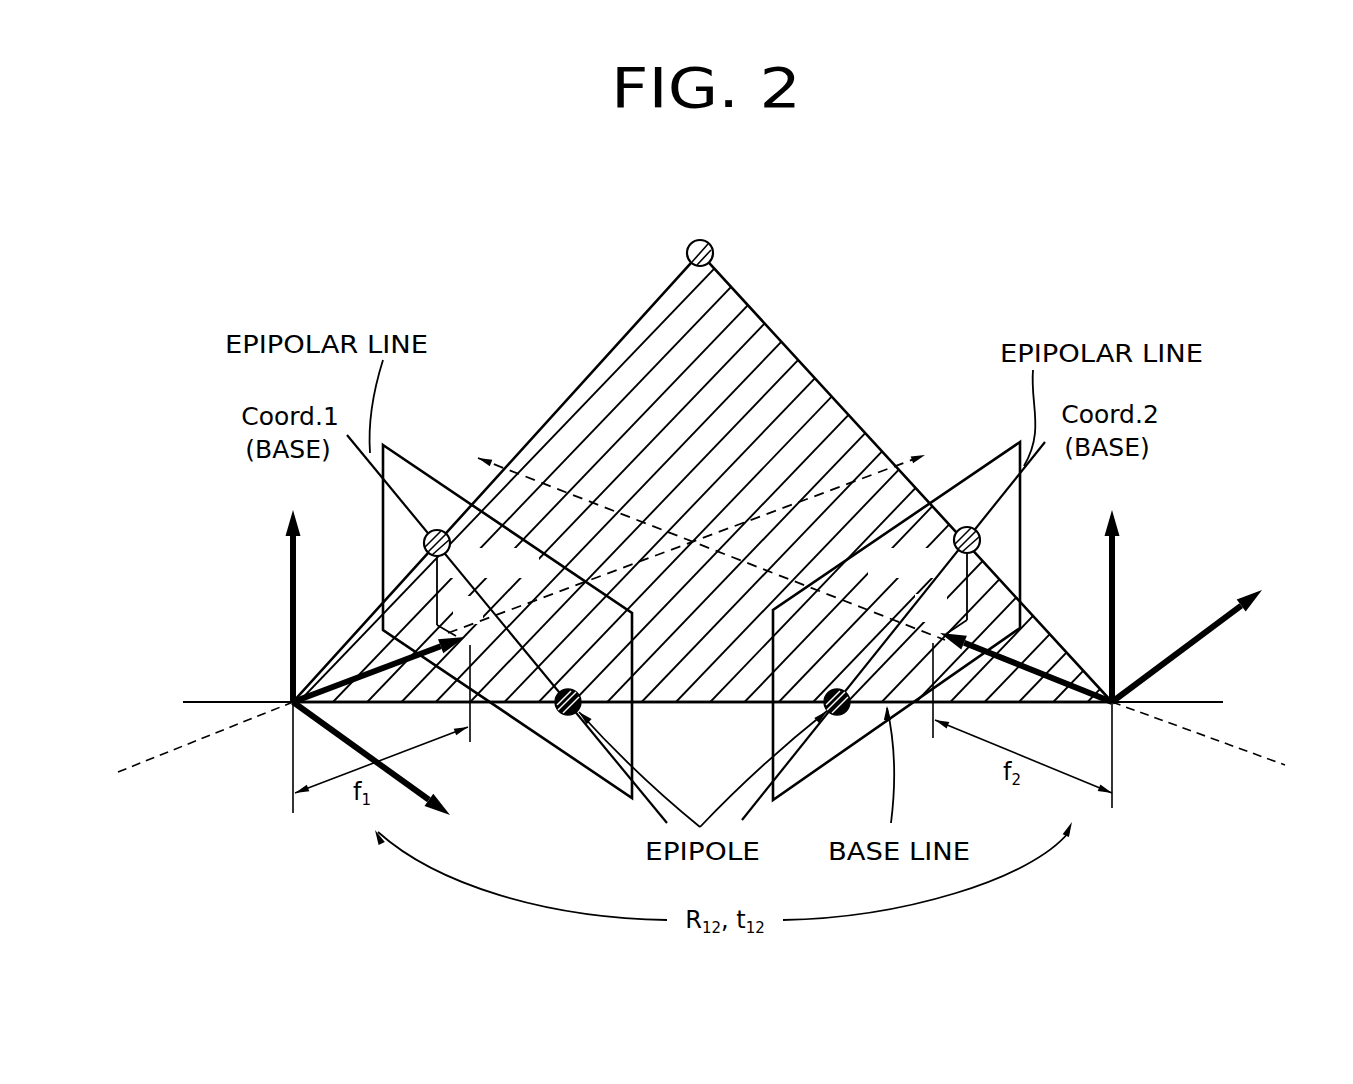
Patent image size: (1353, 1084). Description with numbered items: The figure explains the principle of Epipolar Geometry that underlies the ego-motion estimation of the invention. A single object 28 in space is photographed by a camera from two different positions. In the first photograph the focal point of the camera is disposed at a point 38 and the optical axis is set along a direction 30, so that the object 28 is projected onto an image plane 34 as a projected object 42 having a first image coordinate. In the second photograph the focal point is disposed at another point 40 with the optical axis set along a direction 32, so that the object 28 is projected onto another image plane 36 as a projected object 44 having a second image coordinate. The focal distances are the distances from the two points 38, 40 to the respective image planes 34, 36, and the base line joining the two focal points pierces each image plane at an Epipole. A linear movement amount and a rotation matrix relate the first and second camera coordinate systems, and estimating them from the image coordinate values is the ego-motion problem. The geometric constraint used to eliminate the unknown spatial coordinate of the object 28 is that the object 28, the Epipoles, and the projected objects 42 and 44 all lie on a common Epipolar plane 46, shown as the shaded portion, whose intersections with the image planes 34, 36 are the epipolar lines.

The object 28 is at (712, 248).
The direction 30 is at (874, 470).
The direction 32 is at (540, 478).
The image plane 34 is at (408, 458).
The image plane 36 is at (997, 456).
The point 38 is at (292, 700).
The point 40 is at (1138, 699).
The projected object 42 is at (425, 537).
The projected object 44 is at (977, 532).
The Epipolar plane 46 is at (778, 372).